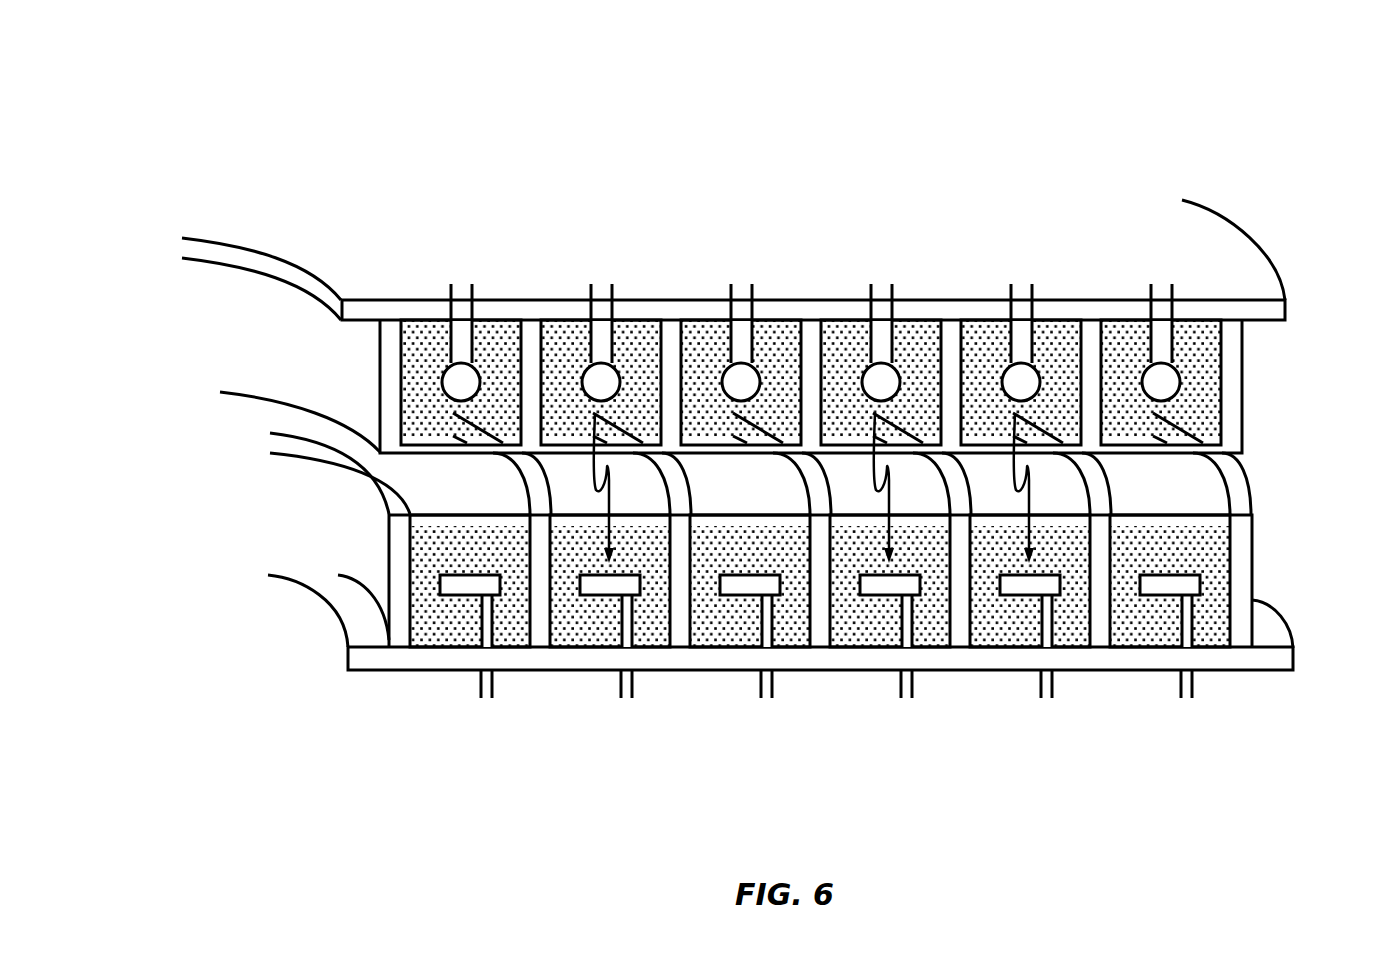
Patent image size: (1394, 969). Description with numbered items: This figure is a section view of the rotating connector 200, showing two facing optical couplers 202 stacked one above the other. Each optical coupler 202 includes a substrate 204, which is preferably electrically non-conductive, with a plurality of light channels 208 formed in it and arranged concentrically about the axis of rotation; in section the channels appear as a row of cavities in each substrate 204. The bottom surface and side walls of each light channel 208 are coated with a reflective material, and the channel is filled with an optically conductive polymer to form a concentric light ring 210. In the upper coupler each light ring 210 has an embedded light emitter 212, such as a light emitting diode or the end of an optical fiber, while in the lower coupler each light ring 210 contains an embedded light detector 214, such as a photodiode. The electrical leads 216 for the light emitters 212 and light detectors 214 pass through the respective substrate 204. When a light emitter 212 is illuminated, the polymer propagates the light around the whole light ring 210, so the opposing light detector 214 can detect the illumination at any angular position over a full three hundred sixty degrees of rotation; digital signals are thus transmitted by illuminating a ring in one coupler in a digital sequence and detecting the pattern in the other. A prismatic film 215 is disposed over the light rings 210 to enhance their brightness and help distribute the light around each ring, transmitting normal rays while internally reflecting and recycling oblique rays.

The display device assembly 200 is at (610, 125).
The optical coupler 202 is at (953, 193).
The substrate 204 is at (1058, 300).
The light channel 208 is at (740, 640).
The light ring 210 is at (1252, 558).
The light emitter 212 is at (445, 372).
The light detector 214 is at (448, 573).
The prismatic film 215 is at (1222, 512).
The electrical leads 216 is at (913, 683).